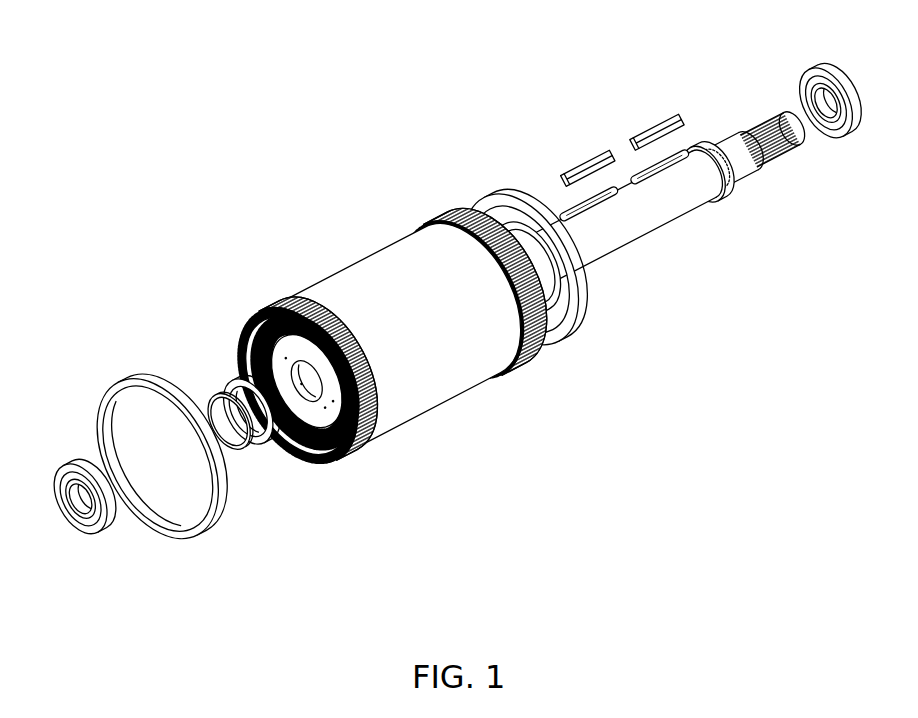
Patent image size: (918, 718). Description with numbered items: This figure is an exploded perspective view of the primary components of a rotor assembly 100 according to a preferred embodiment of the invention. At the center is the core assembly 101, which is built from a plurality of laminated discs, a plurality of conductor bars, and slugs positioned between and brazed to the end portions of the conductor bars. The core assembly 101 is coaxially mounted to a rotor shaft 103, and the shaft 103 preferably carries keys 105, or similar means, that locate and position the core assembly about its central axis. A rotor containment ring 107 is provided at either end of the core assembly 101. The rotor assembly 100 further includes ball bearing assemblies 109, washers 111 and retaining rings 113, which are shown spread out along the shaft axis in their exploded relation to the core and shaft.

The rotor assembly 100 is at (137, 100).
The core assembly 101 is at (360, 270).
The rotor shaft 103 is at (740, 137).
The keys 105 is at (588, 166).
The rotor containment ring 107 is at (140, 383).
The ball bearing assemblies 109 is at (817, 67).
The washers 111 is at (235, 380).
The retaining rings 113 is at (212, 400).